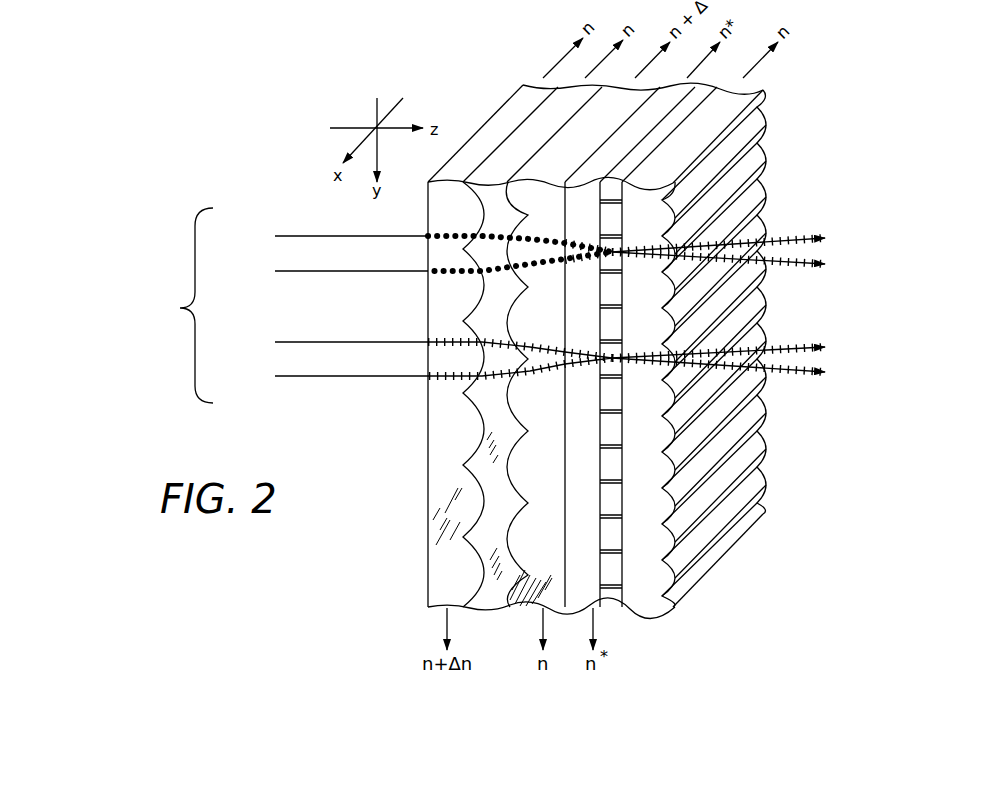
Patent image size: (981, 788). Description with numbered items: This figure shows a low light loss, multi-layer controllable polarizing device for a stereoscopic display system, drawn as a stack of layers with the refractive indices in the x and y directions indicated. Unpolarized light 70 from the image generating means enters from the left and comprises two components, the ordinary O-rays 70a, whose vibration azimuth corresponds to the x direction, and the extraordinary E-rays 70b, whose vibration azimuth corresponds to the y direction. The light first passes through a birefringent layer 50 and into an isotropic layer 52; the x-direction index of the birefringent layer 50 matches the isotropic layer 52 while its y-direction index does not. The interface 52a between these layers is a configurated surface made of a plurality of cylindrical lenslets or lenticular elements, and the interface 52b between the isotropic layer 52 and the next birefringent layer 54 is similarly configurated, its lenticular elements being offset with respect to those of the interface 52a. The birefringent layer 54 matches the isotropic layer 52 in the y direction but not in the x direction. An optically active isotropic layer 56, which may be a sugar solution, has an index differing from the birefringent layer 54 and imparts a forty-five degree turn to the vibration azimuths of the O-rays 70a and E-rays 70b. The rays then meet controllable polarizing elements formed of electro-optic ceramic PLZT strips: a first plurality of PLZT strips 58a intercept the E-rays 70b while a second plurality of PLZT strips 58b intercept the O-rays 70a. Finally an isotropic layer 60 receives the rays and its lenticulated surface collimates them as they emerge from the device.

The birefringent layer 50 is at (440, 567).
The isotropic layer 52 is at (517, 365).
The interface 52a is at (480, 443).
The interface 52b is at (508, 462).
The birefringent layer 54 is at (548, 580).
The optically active isotropic layer 56 is at (615, 367).
The first plurality of PLZT strips 58a is at (603, 527).
The second plurality of PLZT strips 58b is at (615, 432).
The isotropic layer 60 is at (643, 588).
The unpolarized light 70 is at (97, 390).
The O-rays 70a is at (353, 238).
The E-rays 70b is at (345, 344).